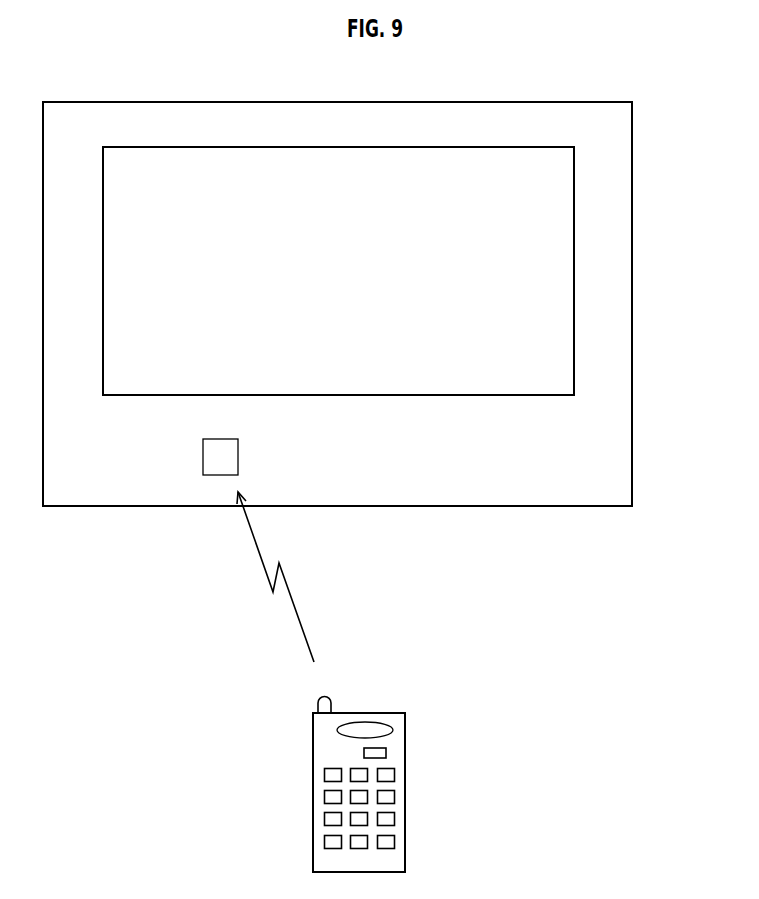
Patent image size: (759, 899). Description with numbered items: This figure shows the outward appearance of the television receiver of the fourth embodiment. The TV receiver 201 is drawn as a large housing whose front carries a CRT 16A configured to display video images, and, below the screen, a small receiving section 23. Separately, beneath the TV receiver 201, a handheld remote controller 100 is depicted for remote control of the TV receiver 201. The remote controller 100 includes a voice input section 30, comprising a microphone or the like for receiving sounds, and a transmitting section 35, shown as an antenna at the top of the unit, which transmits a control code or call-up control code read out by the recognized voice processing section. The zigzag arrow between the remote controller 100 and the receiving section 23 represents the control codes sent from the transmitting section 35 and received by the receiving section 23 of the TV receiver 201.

The TV receiver 201 is at (632, 283).
The CRT 16A is at (490, 395).
The receiving section 23 is at (203, 475).
The remote controller 100 is at (405, 802).
The voice input section 30 is at (395, 728).
The transmitting section 35 is at (318, 700).